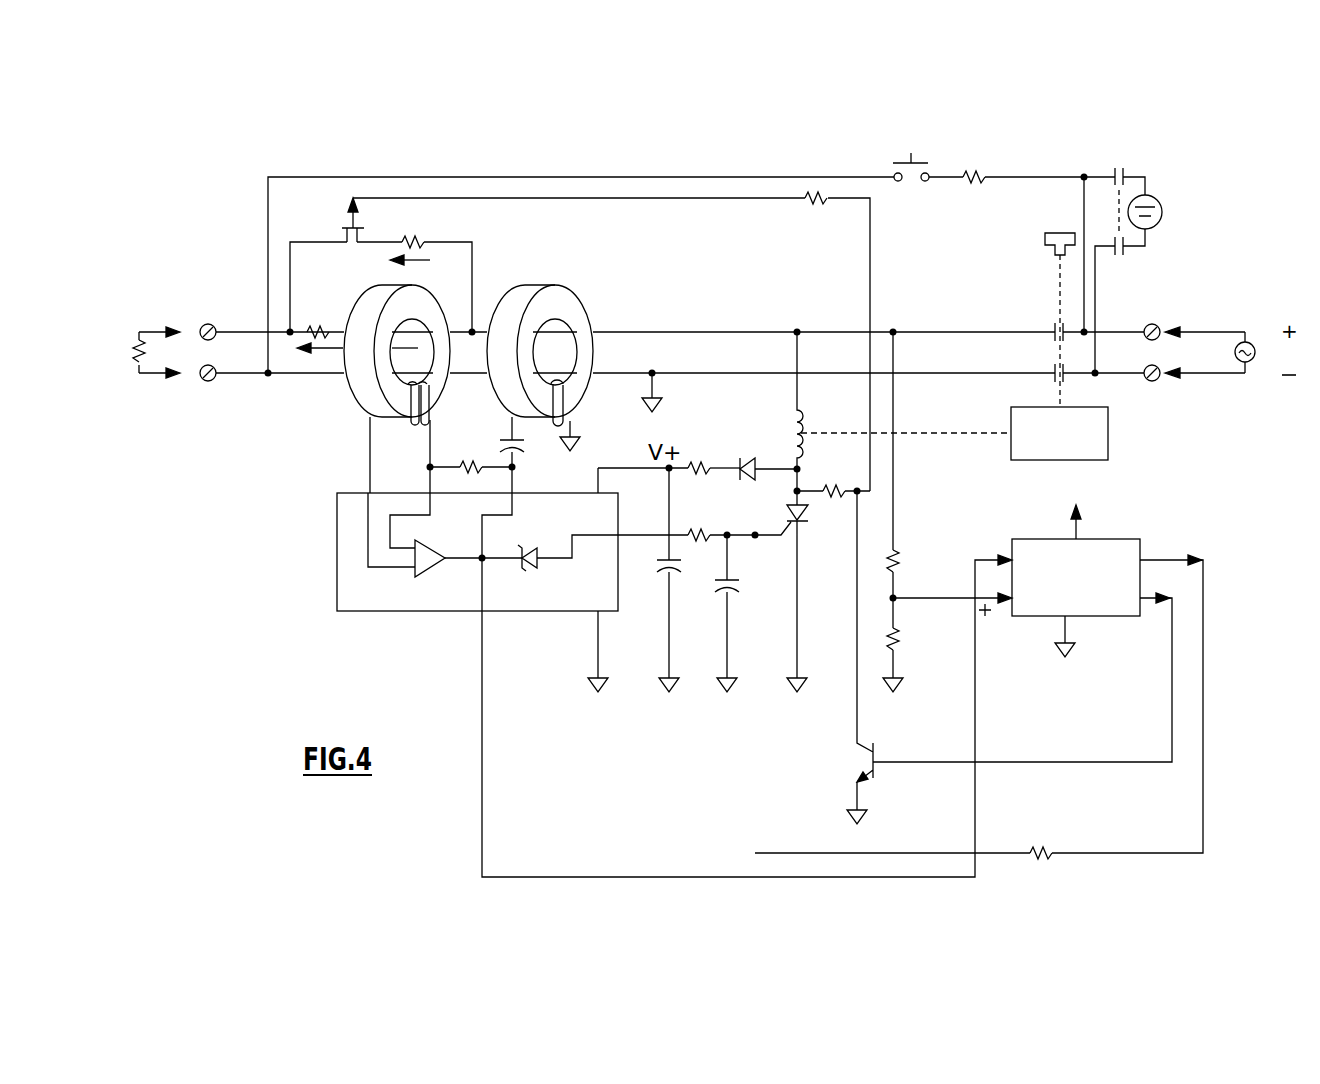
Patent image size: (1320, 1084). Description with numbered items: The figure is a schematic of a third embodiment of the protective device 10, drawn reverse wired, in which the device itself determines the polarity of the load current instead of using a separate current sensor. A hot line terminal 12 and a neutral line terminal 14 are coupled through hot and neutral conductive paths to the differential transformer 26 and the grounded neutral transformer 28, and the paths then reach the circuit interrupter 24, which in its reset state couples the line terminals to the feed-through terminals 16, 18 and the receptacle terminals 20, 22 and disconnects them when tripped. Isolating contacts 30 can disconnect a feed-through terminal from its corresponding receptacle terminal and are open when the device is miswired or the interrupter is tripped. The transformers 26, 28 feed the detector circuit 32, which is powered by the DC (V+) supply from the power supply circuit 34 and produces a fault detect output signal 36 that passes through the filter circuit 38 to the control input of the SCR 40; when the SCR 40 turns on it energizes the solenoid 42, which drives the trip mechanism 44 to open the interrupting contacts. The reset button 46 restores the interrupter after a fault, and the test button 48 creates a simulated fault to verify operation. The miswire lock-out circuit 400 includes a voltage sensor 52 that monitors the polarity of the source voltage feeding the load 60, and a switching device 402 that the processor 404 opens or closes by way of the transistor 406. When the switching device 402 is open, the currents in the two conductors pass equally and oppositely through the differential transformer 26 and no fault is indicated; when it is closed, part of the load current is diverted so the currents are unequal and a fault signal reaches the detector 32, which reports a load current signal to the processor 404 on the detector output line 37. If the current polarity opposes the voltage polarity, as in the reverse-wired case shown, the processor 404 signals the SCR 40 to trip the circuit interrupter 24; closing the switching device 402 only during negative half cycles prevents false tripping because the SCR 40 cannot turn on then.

The device 10 is at (503, 166).
The hot line terminal 12 is at (208, 322).
The neutral line terminal 14 is at (208, 383).
The feed-through terminal 16 is at (1167, 326).
The feed-through terminal 18 is at (1165, 382).
The receptacle terminal 20 is at (1152, 192).
The receptacle terminal 22 is at (1160, 226).
The circuit interrupter 24 is at (1045, 347).
The differential transformer 26 is at (373, 305).
The grounded neutral transformer 28 is at (562, 300).
The isolating contacts 30 is at (1125, 166).
The detector circuit 32 is at (346, 586).
The power supply circuit 34 is at (693, 460).
The fault detect output signal 36 is at (621, 536).
The detector output line 37 is at (598, 640).
The filter circuit 38 is at (715, 586).
The SCR 40 is at (786, 513).
The solenoid 42 is at (793, 421).
The trip mechanism 44 is at (1108, 430).
The reset button 46 is at (1046, 238).
The test button 48 is at (893, 165).
The voltage sensor 52 is at (897, 598).
The load 60 is at (139, 332).
The miswire lock-out circuit 400 is at (1129, 526).
The switching device 402 is at (347, 217).
The processor 404 is at (1098, 617).
The transistor 406 is at (876, 749).